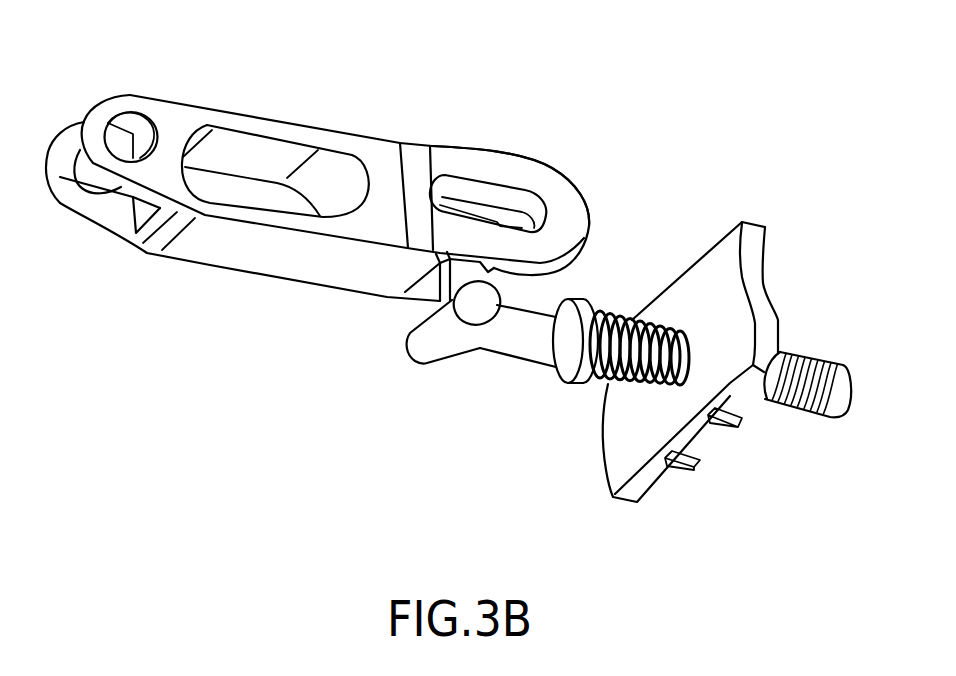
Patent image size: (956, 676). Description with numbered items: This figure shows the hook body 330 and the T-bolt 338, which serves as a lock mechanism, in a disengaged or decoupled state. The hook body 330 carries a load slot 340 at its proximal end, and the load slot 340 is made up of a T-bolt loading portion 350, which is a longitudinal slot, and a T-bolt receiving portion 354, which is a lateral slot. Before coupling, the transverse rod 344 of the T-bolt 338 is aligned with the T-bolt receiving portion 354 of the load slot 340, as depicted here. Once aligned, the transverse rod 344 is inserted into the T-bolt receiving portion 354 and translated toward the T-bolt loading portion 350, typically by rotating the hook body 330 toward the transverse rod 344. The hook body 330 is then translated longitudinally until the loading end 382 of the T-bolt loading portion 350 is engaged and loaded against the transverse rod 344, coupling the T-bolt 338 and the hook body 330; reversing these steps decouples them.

The hook body 330 is at (373, 157).
The T-bolt loading portion 350 is at (489, 182).
The load slot 340 is at (532, 197).
The loading end 382 is at (548, 217).
The T-bolt receiving portion 354 is at (427, 288).
The transverse rod 344 is at (468, 327).
The T-bolt 338 is at (443, 353).